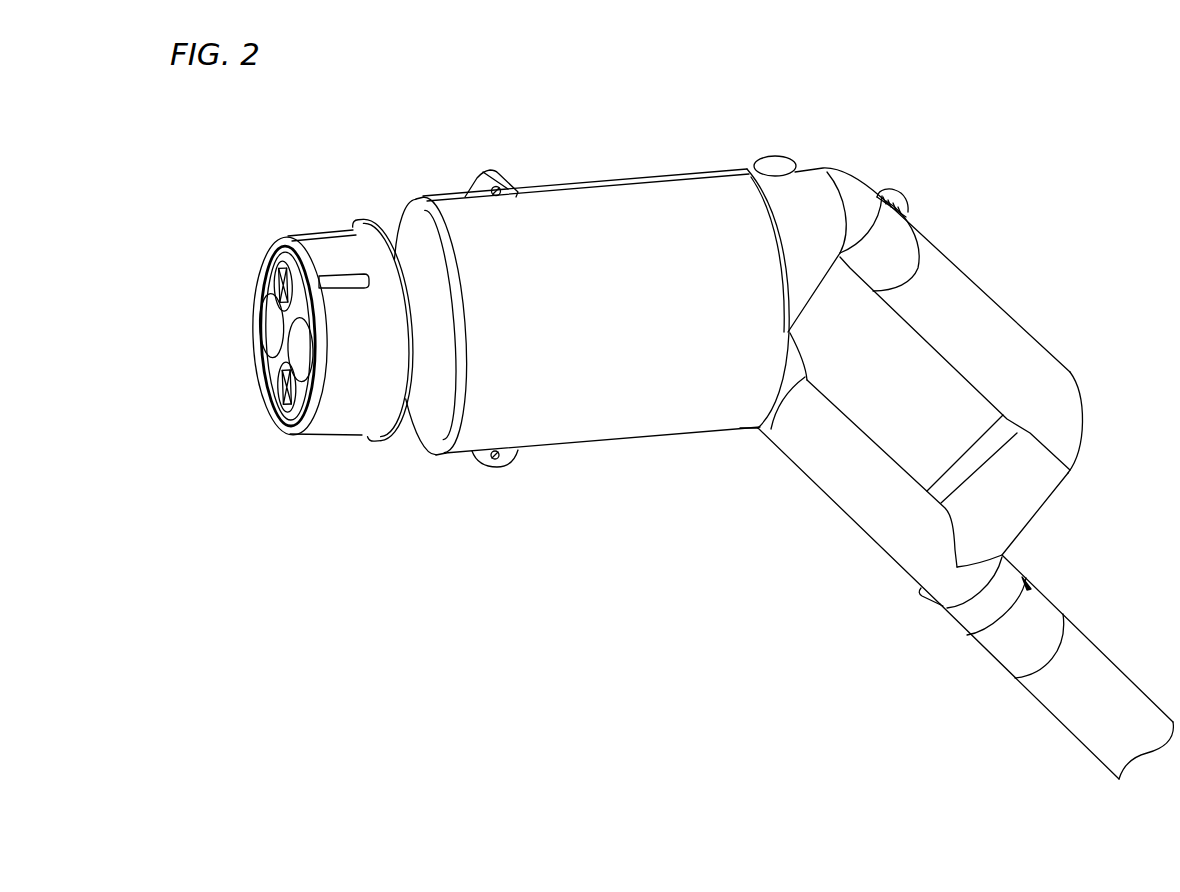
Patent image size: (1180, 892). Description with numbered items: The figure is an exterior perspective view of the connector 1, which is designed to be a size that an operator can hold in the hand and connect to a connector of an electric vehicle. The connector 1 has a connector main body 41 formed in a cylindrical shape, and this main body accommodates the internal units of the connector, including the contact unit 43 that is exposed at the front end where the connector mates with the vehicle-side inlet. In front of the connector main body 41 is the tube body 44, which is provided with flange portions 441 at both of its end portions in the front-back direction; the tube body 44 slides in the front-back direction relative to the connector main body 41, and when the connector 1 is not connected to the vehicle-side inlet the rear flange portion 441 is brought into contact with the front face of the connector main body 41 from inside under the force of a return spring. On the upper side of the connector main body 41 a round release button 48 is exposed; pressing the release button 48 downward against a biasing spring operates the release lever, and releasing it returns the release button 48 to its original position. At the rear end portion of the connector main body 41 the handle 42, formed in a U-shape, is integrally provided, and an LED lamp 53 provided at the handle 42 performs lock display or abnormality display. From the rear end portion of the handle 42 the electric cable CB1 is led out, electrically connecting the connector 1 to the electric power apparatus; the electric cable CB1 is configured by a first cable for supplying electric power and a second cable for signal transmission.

The connector 1 is at (325, 155).
The connector main body 41 is at (570, 187).
The handle 42 is at (1002, 308).
The contact unit 43 is at (298, 407).
The tube body 44 is at (410, 425).
The flange portion 441 is at (372, 438).
The release button 48 is at (783, 157).
The LED lamp 53 is at (900, 193).
The electric cable CB1 is at (1113, 675).